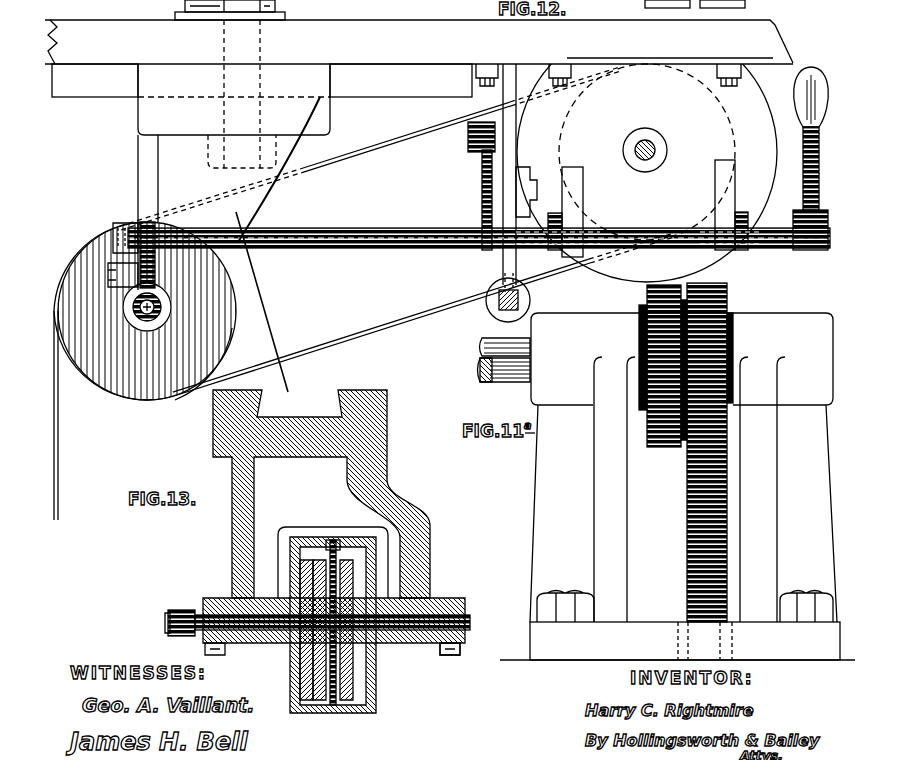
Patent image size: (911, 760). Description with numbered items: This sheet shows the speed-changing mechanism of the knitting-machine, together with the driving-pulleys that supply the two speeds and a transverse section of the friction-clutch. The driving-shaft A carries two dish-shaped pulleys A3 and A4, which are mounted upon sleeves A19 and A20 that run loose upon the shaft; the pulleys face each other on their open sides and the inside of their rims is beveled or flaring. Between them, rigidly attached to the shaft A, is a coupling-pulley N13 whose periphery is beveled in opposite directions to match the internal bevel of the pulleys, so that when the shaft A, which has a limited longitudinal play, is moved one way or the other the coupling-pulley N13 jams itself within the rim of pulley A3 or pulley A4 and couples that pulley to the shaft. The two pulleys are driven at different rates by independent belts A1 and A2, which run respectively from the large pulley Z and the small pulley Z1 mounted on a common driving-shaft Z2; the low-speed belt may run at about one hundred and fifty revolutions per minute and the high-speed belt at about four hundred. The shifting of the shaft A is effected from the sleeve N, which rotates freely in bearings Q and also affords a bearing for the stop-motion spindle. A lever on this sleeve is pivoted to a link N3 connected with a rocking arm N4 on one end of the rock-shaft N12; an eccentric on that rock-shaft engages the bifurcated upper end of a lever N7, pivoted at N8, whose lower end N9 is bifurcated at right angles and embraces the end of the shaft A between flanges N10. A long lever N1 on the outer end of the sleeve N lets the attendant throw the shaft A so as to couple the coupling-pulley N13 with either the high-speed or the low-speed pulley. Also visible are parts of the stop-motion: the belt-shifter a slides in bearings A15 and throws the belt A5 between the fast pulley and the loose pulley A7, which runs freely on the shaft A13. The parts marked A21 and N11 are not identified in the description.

In FIG. 12, the driving-shaft A is at (185, 8).
In FIG. 13, the driving-shaft A is at (470, 622).
In FIG. 12, the belt A1 is at (256, 334).
In FIG. 11a, the belt A1 is at (690, 486).
In FIG. 12, the belt A2 is at (233, 350).
In FIG. 11a, the belt A2 is at (664, 448).
In FIG. 12, the dish-shaped pulley A3 is at (147, 311).
In FIG. 13, the dish-shaped pulley A3 is at (292, 688).
In FIG. 13, the dish-shaped pulley A4 is at (368, 686).
In FIG. 12, the belt A5 is at (408, 138).
In FIG. 12, the loose pulley A7 is at (730, 118).
In FIG. 12, the shaft A13 is at (635, 150).
In FIG. 12, the bearings A15 is at (498, 296).
In FIG. 13, the sleeve A19 is at (440, 598).
In FIG. 12, the sleeve A20 is at (133, 328).
In FIG. 13, the sleeve A20 is at (432, 655).
In FIG. 13, the bracket A21 is at (228, 598).
In FIG. 12, the belt-shifter a is at (499, 306).
In FIG. 12, the sleeve N is at (772, 246).
In FIG. 12, the long lever N1 is at (808, 66).
In FIG. 12, the link N3 is at (468, 142).
In FIG. 12, the rocking arm N4 is at (482, 186).
In FIG. 12, the lever N7 is at (155, 258).
In FIG. 12, the pivot N8 is at (108, 276).
In FIG. 12, the lower end of lever N9 is at (155, 284).
In FIG. 13, the flanges N10 is at (175, 610).
In FIG. 12, the gear N11 is at (133, 307).
In FIG. 12, the rock-shaft N12 is at (360, 246).
In FIG. 13, the coupling-pulley N13 is at (352, 668).
In FIG. 12, the bearings Q is at (567, 251).
In FIG. 11a, the large pulley Z is at (690, 490).
In FIG. 11a, the small pulley Z1 is at (647, 413).
In FIG. 11a, the driving-shaft Z2 is at (480, 345).